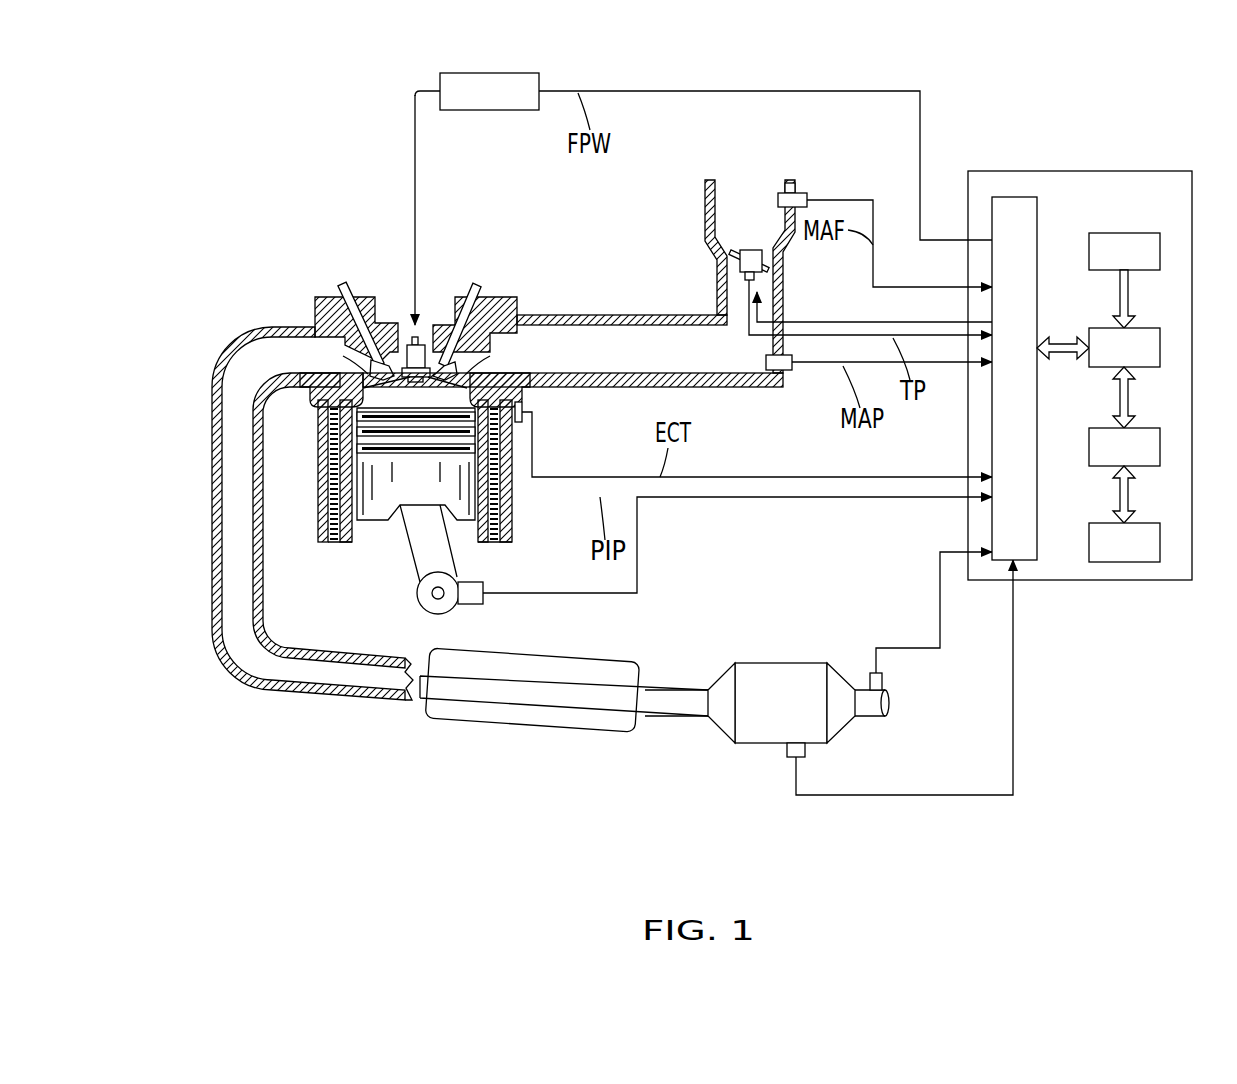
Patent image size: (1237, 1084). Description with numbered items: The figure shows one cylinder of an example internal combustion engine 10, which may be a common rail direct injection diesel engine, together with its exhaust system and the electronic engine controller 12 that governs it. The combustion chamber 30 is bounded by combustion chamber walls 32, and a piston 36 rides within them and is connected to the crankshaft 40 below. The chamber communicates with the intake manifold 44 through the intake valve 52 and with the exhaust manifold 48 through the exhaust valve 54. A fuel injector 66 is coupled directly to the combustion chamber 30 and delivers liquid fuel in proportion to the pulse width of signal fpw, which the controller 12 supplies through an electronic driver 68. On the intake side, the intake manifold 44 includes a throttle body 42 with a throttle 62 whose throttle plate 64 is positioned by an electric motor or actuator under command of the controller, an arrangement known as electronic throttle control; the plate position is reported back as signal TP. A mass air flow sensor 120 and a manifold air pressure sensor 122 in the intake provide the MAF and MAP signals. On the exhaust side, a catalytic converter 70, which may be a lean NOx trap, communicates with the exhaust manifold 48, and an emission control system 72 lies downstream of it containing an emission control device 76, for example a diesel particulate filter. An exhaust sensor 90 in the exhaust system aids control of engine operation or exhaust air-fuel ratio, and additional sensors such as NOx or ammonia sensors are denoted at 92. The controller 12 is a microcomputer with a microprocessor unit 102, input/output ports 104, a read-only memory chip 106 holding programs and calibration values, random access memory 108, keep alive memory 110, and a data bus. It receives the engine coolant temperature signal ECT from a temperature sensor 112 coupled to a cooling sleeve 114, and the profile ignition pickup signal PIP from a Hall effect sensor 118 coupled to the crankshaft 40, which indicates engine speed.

The internal combustion engine 10 is at (238, 273).
The electronic engine controller 12 is at (1093, 171).
The combustion chamber 30 is at (373, 408).
The combustion chamber walls 32 is at (345, 542).
The piston 36 is at (400, 500).
The crankshaft 40 is at (418, 602).
The throttle body 42 is at (762, 224).
The intake manifold 44 is at (697, 361).
The exhaust manifold 48 is at (290, 369).
The intake valve 52 is at (465, 362).
The exhaust valve 54 is at (335, 283).
The throttle 62 is at (765, 262).
The throttle plate 64 is at (733, 258).
The fuel injector 66 is at (424, 343).
The electronic driver 68 is at (490, 110).
The catalytic converter 70 is at (528, 732).
The emission control system 72 is at (830, 602).
The emission control device 76 is at (780, 663).
The exhaust sensor 90 is at (795, 757).
The additional exhaust sensors 92 is at (882, 680).
The microprocessor unit 102 is at (1152, 328).
The input/output ports 104 is at (1037, 222).
The read-only memory chip 106 is at (1140, 233).
The random access memory 108 is at (1152, 428).
The keep alive memory 110 is at (1152, 523).
The temperature sensor 112 is at (525, 410).
The cooling sleeve 114 is at (500, 487).
The Hall effect sensor 118 is at (486, 585).
The mass air flow sensor 120 is at (800, 192).
The manifold air pressure sensor 122 is at (790, 372).